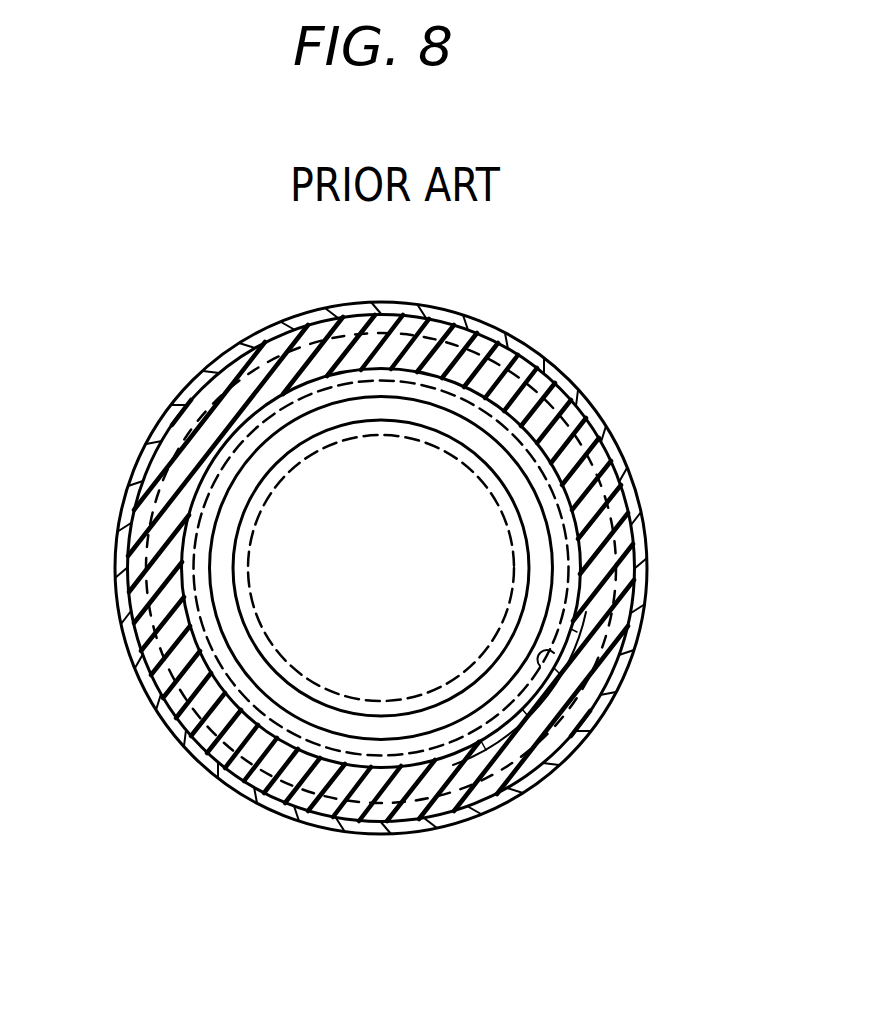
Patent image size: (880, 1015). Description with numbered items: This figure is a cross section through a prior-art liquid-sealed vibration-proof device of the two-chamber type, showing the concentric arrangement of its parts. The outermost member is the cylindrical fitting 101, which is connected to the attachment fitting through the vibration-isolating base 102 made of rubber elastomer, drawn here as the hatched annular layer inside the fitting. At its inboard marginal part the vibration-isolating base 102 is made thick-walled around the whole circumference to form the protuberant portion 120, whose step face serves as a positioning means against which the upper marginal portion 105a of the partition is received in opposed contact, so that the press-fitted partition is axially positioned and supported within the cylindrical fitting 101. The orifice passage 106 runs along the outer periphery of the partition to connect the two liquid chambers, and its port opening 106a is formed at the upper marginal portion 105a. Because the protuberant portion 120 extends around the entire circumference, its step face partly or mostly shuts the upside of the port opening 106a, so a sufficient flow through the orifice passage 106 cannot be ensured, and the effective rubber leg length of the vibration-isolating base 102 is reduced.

The cylindrical fitting 101 is at (585, 386).
The vibration-isolating base 102 is at (537, 350).
The upper marginal portion 105a is at (563, 525).
The orifice passage 106 is at (198, 713).
The port opening 106a is at (557, 692).
The protuberant portion 120 is at (583, 645).